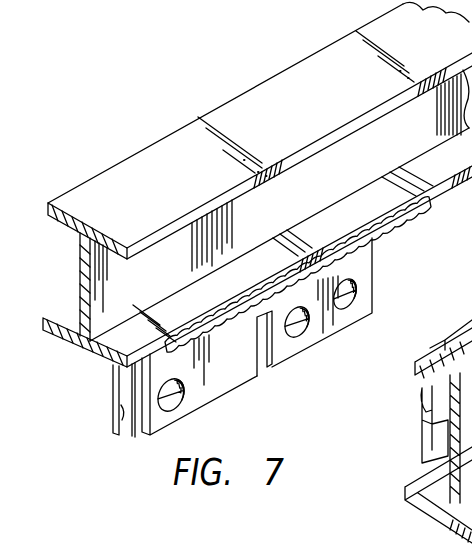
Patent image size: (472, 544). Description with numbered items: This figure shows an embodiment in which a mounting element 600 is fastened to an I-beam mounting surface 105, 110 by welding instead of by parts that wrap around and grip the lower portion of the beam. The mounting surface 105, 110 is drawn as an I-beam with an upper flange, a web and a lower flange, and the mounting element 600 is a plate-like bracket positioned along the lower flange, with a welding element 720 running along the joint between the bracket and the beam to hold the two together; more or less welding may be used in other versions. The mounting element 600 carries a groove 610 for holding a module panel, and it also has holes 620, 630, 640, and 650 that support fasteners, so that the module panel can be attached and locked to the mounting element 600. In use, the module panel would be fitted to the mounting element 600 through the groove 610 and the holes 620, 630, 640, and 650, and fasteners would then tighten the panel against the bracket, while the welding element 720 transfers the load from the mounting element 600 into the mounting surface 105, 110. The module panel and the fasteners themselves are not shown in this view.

The mounting surface 105 is at (231, 128).
The mounting surface 110 is at (260, 130).
The mounting element 600 is at (366, 270).
The groove 610 is at (121, 405).
The hole 620 is at (185, 401).
The hole 630 is at (233, 362).
The hole 640 is at (306, 333).
The hole 650 is at (355, 304).
The welding element 720 is at (407, 213).